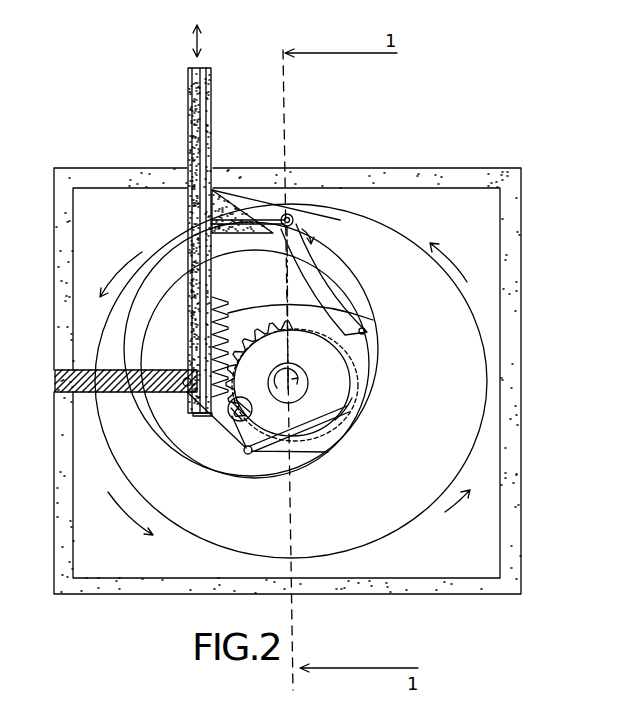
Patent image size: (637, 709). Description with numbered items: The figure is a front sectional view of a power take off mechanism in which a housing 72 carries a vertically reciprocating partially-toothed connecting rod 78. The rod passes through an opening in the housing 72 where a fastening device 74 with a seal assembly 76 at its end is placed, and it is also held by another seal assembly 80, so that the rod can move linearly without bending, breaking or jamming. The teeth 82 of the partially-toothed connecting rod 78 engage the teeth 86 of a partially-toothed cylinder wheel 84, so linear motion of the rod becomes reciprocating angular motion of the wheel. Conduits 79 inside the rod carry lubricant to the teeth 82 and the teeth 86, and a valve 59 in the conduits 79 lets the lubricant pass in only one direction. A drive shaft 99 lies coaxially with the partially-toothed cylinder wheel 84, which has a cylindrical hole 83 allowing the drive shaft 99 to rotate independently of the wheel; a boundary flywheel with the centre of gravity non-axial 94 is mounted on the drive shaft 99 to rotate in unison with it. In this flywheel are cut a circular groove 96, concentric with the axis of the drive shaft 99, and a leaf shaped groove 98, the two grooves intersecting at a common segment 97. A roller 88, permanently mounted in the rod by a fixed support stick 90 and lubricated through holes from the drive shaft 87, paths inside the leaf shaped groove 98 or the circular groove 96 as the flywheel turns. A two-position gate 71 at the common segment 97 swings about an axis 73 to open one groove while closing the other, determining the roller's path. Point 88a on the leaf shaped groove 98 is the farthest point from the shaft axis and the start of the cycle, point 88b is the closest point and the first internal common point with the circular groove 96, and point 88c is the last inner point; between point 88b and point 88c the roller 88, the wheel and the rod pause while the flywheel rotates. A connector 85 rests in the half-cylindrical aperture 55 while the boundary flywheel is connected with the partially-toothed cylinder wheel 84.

The half-cylindrical aperture 55 is at (248, 455).
The valve 59 is at (197, 370).
The two-position gate 71 is at (329, 453).
The housing 72 is at (432, 172).
The axis 73 is at (254, 453).
The fastening device 74 is at (53, 392).
The seal assembly 76 is at (170, 395).
The partially-toothed connecting rod 78 is at (212, 117).
The conduits 79 is at (285, 227).
The seal assembly 80 is at (213, 167).
The teeth 82 is at (219, 300).
The cylindrical hole 83 is at (348, 408).
The partially-toothed cylinder wheel 84 is at (323, 357).
The connector 85 is at (235, 418).
The teeth 86 is at (292, 297).
The drive shaft 87 is at (307, 210).
The roller 88 is at (292, 217).
The point 88a is at (287, 228).
The point 88b is at (366, 328).
The point 88c is at (250, 454).
The fixed support stick 90 is at (240, 210).
The boundary flywheel with the centre of gravity non-axial 94 is at (445, 338).
The circular groove 96 is at (315, 320).
The common segment 97 is at (352, 397).
The leaf shaped groove 98 is at (343, 275).
The drive shaft 99 is at (307, 378).